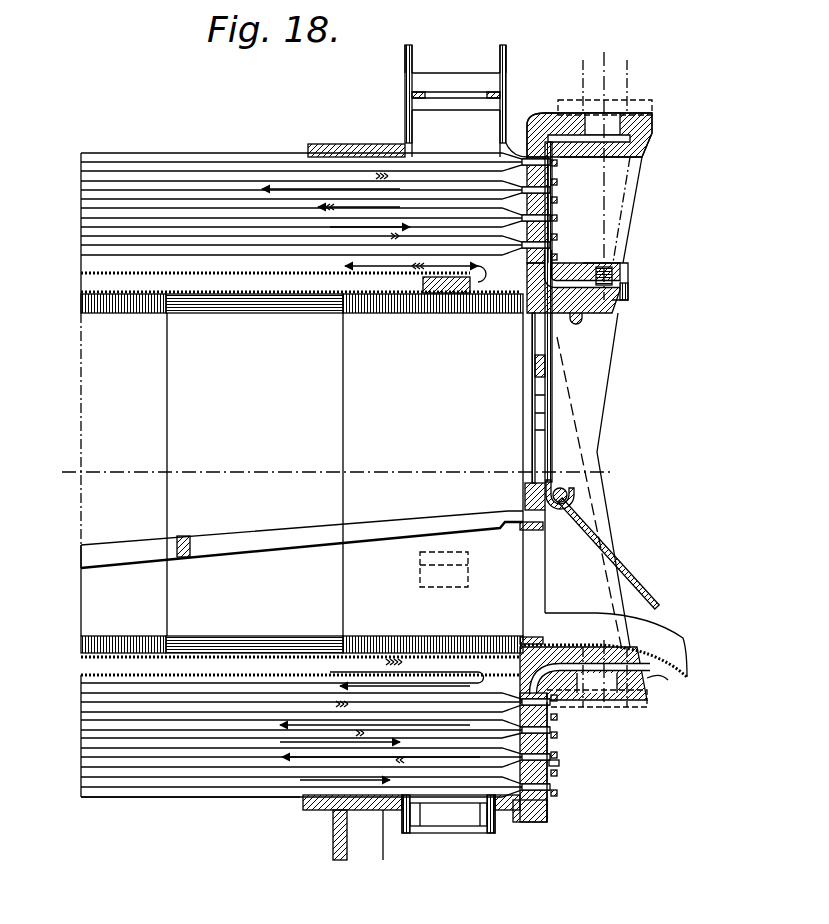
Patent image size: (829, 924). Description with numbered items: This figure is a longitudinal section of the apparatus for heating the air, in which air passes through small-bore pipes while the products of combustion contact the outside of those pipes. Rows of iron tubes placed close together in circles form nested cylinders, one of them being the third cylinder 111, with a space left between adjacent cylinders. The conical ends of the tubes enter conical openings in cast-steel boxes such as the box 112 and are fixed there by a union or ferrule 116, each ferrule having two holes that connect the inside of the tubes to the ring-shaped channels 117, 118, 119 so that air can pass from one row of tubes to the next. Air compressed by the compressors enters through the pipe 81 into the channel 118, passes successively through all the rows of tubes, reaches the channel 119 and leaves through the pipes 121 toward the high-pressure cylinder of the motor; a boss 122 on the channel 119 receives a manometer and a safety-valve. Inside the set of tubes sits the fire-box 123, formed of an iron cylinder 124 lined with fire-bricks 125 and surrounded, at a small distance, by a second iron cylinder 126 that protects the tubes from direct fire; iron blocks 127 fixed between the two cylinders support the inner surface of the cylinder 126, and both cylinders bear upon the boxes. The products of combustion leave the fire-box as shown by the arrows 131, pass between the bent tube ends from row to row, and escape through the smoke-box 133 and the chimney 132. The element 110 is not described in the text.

The pipe 81 is at (605, 171).
The heat exchanger 110 is at (85, 767).
The third cylinder 111 is at (84, 196).
The cast-steel box 112 is at (576, 153).
The union or ferrule 116 is at (560, 257).
The ring-shaped channel 117 is at (548, 763).
The ring-shaped channel 118 is at (540, 147).
The ring-shaped channel 119 is at (590, 315).
The pipes 121 is at (597, 691).
The boss 122 is at (627, 281).
The fire-box 123 is at (337, 458).
The iron cylinder 124 is at (220, 653).
The fire-bricks 125 is at (160, 313).
The second iron cylinder 126 is at (265, 672).
The iron blocks 127 is at (447, 294).
The arrows 131 is at (345, 262).
The chimney 132 is at (458, 85).
The smoke-box 133 is at (412, 170).